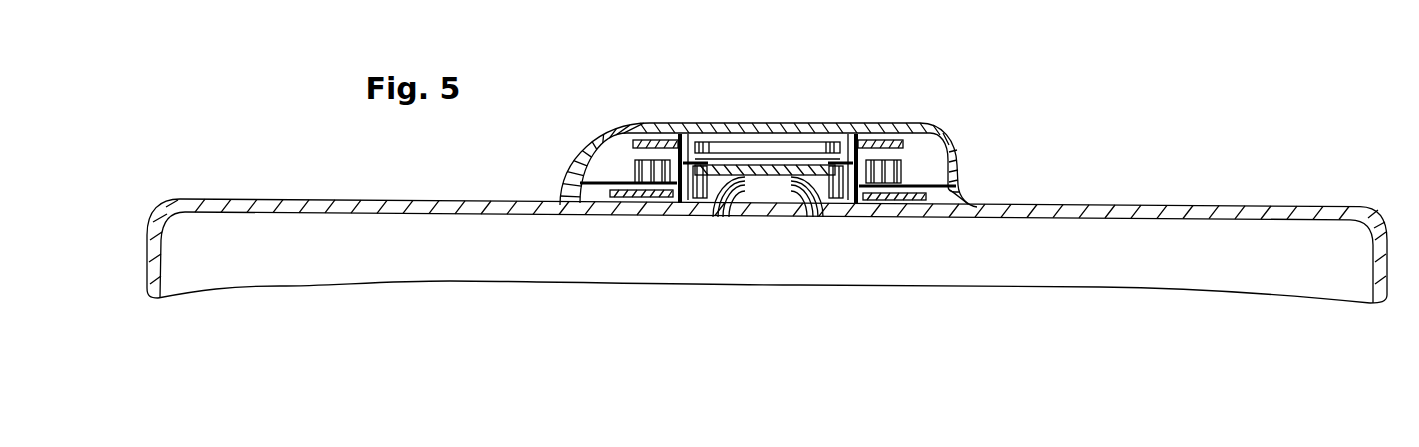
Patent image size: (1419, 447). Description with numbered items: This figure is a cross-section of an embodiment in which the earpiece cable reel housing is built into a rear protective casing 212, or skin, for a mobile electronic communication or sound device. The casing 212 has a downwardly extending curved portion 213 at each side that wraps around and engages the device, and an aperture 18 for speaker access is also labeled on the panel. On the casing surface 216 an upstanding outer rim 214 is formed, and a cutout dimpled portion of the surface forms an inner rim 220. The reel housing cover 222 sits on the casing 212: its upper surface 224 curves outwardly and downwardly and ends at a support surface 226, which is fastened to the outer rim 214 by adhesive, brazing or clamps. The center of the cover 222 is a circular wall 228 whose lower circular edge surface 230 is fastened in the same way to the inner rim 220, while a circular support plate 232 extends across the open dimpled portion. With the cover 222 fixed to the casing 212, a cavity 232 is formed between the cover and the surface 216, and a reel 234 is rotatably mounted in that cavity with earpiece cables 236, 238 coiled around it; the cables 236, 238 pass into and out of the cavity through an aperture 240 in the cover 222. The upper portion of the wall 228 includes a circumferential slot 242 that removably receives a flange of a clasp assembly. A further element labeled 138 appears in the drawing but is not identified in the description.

The aperture 18 is at (238, 201).
The latch mechanism 138 is at (749, 197).
The casing 212 is at (767, 218).
The downwardly extending curved portion 213 is at (1372, 212).
The outer rim 214 is at (560, 197).
The casing surface 216 is at (1110, 203).
The inner rim 220 is at (812, 178).
The reel housing cover 222 is at (761, 131).
The upper surface 224 is at (625, 125).
The support surface 226 is at (567, 168).
The circular wall 228 is at (668, 127).
The circular edge surface 230 is at (800, 195).
The cavity 232 is at (802, 105).
The reel 234 is at (625, 198).
The earpiece cable 236 is at (633, 162).
The earpiece cable 238 is at (768, 171).
The aperture 240 is at (970, 160).
The circumferential slot 242 is at (702, 142).